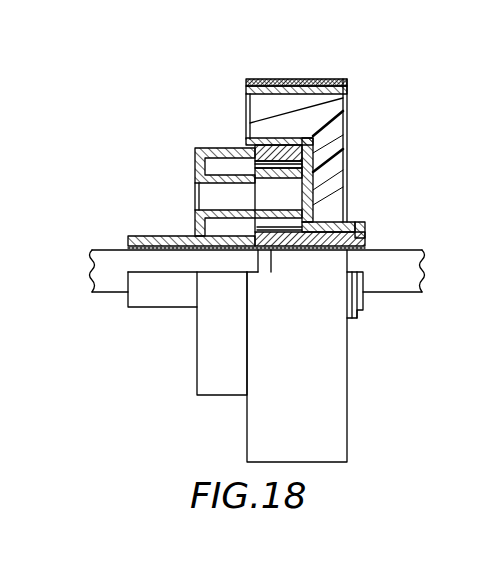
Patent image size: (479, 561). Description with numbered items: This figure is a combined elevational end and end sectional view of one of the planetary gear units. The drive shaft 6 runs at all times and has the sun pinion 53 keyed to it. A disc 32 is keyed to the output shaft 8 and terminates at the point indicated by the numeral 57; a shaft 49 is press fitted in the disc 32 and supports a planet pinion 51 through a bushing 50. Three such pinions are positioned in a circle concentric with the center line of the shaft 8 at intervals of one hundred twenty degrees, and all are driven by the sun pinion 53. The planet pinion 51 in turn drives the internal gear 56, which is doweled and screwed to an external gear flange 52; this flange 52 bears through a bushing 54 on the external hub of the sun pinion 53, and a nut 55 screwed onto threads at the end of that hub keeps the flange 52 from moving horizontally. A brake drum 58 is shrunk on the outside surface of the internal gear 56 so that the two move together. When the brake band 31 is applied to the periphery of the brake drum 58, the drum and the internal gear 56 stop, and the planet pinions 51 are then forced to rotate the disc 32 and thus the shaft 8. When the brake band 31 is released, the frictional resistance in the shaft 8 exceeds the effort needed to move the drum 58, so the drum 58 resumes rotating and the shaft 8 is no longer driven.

The shaft 6 is at (407, 276).
The shaft 8 is at (95, 250).
The brake band 31 is at (323, 82).
The disc 32 is at (205, 148).
The shaft 49 is at (200, 193).
The bushing 50 is at (284, 182).
The planet pinion 51 is at (347, 166).
The external gear flange 52 is at (351, 222).
The sun pinion 53 is at (271, 273).
The bushing 54 is at (365, 229).
The nut 55 is at (365, 306).
The internal gear 56 is at (313, 140).
The terminating point of disc 57 is at (260, 250).
The brake drum 58 is at (253, 103).